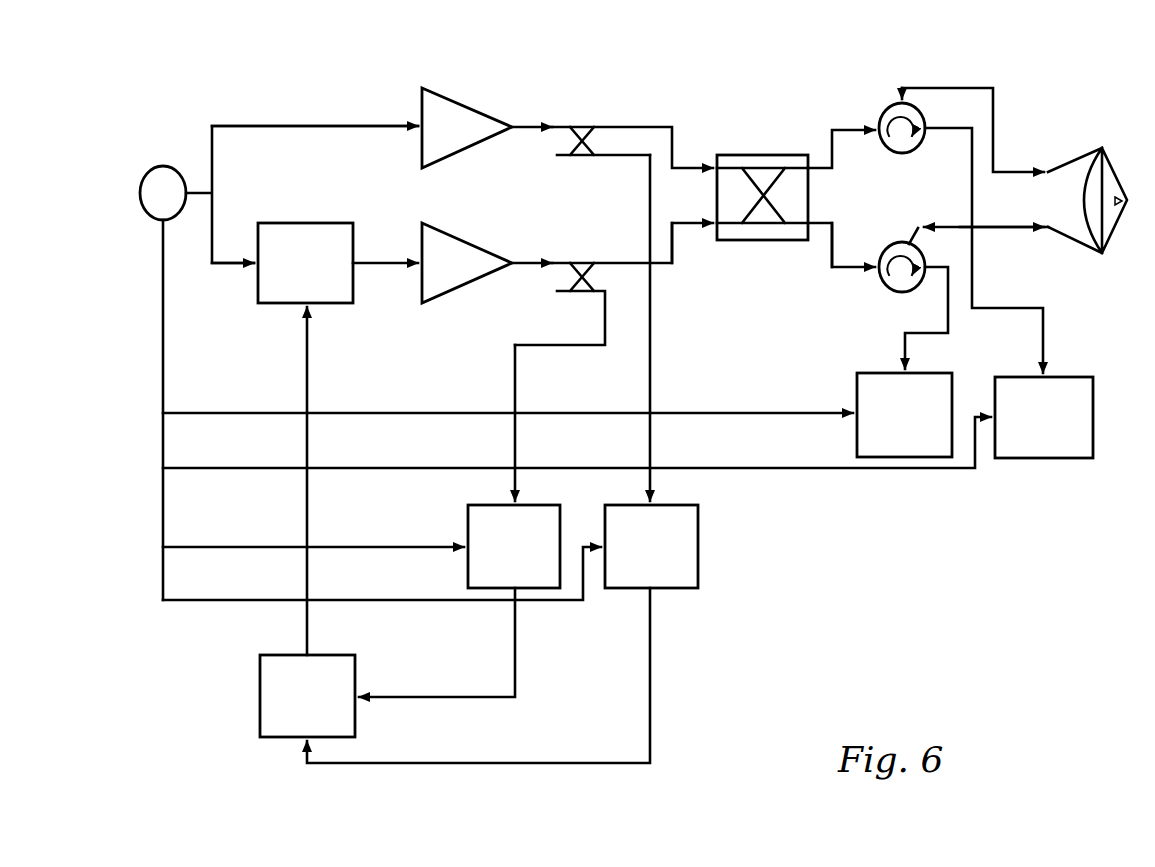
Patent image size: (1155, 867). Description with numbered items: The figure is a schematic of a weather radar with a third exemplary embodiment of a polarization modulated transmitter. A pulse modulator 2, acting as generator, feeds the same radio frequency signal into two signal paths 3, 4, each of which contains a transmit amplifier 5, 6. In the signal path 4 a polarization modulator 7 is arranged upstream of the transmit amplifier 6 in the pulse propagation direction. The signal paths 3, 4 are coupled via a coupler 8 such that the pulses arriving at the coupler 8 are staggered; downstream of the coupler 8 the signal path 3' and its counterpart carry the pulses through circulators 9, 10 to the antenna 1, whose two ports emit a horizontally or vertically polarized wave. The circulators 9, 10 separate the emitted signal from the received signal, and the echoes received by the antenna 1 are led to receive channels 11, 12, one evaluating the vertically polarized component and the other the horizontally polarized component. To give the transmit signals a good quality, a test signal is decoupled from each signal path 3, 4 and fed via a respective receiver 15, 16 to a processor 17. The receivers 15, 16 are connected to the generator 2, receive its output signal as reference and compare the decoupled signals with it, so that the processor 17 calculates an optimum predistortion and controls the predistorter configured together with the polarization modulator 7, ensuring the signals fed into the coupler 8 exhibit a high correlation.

The antenna 1 is at (1116, 153).
The pulse modulator 2 is at (160, 169).
The signal path 3 is at (615, 267).
The signal path 3' is at (675, 262).
The signal path 4 is at (674, 284).
The transmit amplifier 5 is at (457, 116).
The transmit amplifier 6 is at (450, 278).
The polarization modulator 7 is at (272, 306).
The coupler 8 is at (757, 153).
The circulator 9 is at (889, 152).
The circulator 10 is at (895, 285).
The receive channel 11 is at (870, 429).
The receive channel 12 is at (1093, 434).
The receiver 15 is at (698, 553).
The receiver 16 is at (472, 523).
The processor 17 is at (258, 702).